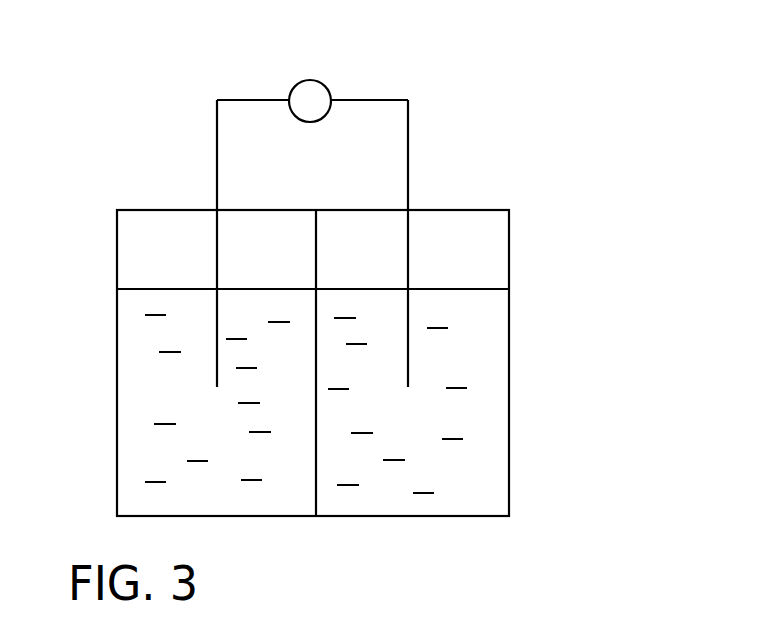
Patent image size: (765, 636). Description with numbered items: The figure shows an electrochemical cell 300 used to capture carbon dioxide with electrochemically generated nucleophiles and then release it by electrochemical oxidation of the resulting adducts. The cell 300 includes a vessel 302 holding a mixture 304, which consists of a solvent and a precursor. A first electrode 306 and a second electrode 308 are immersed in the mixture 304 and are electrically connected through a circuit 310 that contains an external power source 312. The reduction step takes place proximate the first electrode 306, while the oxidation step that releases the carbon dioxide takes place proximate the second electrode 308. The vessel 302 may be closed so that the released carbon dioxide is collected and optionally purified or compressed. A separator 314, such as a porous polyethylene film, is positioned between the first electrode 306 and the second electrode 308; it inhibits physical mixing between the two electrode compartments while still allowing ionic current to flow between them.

The electrochemical cell 300 is at (128, 120).
The vessel 302 is at (509, 224).
The mixture 304 is at (469, 460).
The first electrode 306 is at (217, 350).
The second electrode 308 is at (408, 344).
The circuit 310 is at (381, 100).
The external power source 312 is at (310, 80).
The separator 314 is at (316, 462).